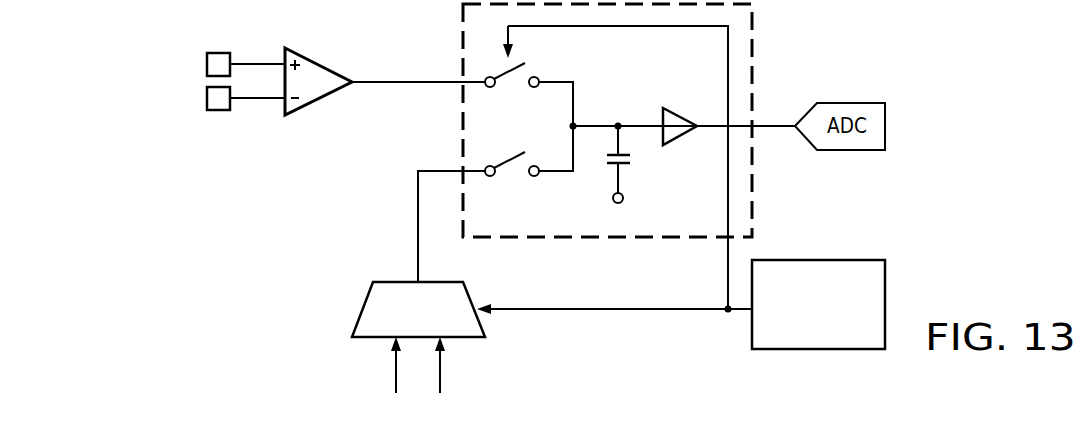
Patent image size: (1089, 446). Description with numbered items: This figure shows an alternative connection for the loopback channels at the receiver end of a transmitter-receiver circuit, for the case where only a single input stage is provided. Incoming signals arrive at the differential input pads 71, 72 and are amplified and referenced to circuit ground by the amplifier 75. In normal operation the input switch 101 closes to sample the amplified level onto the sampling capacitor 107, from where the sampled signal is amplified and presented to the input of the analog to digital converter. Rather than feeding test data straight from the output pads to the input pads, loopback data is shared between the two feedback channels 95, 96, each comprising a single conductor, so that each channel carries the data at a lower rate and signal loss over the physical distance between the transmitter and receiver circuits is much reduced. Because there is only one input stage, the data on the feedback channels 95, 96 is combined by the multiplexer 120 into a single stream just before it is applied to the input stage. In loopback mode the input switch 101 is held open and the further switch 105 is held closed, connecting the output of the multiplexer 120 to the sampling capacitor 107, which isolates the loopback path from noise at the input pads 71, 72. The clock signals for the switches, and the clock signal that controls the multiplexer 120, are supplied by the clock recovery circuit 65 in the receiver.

The differential input pad 71 is at (207, 60).
The differential input pad 72 is at (207, 93).
The amplifier 75 is at (318, 60).
The input switch 101 is at (513, 86).
The further switch 105 is at (513, 175).
The sampling capacitor 107 is at (632, 160).
The multiplexer 120 is at (440, 326).
The feedback channel 95 is at (393, 365).
The feedback channel 96 is at (443, 365).
The clock recovery circuit 65 is at (818, 350).